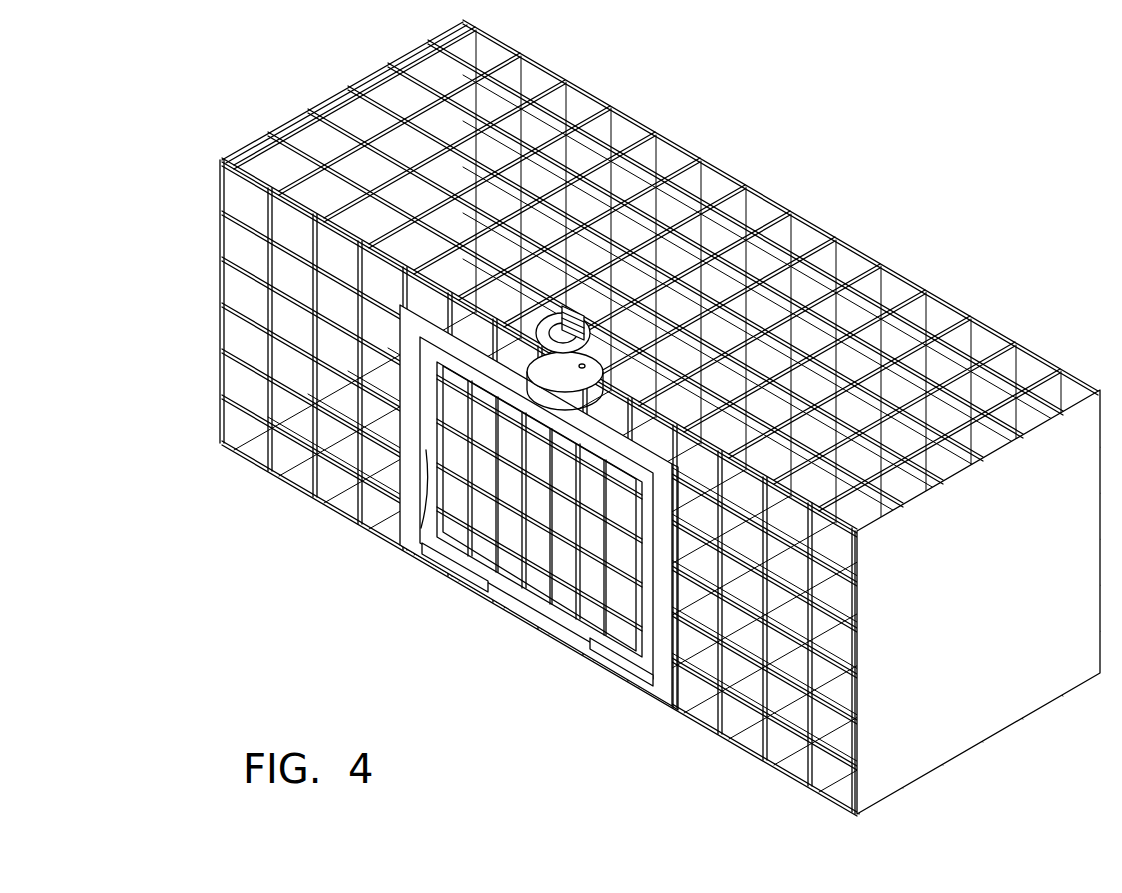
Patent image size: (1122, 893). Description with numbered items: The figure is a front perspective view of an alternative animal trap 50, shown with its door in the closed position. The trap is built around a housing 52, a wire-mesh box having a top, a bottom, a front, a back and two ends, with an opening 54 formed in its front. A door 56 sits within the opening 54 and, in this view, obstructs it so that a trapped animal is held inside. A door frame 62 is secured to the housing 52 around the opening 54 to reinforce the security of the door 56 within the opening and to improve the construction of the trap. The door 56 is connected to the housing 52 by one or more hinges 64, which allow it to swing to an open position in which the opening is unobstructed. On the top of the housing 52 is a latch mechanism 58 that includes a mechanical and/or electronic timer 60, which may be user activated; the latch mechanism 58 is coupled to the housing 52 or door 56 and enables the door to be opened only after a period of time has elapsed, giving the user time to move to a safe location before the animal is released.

The animal trap 50 is at (660, 418).
The housing 52 is at (946, 298).
The opening 54 is at (420, 518).
The door 56 is at (545, 598).
The latch mechanism 58 is at (570, 315).
The timer 60 is at (705, 332).
The door frame 62 is at (559, 399).
The hinges 64 is at (450, 557).